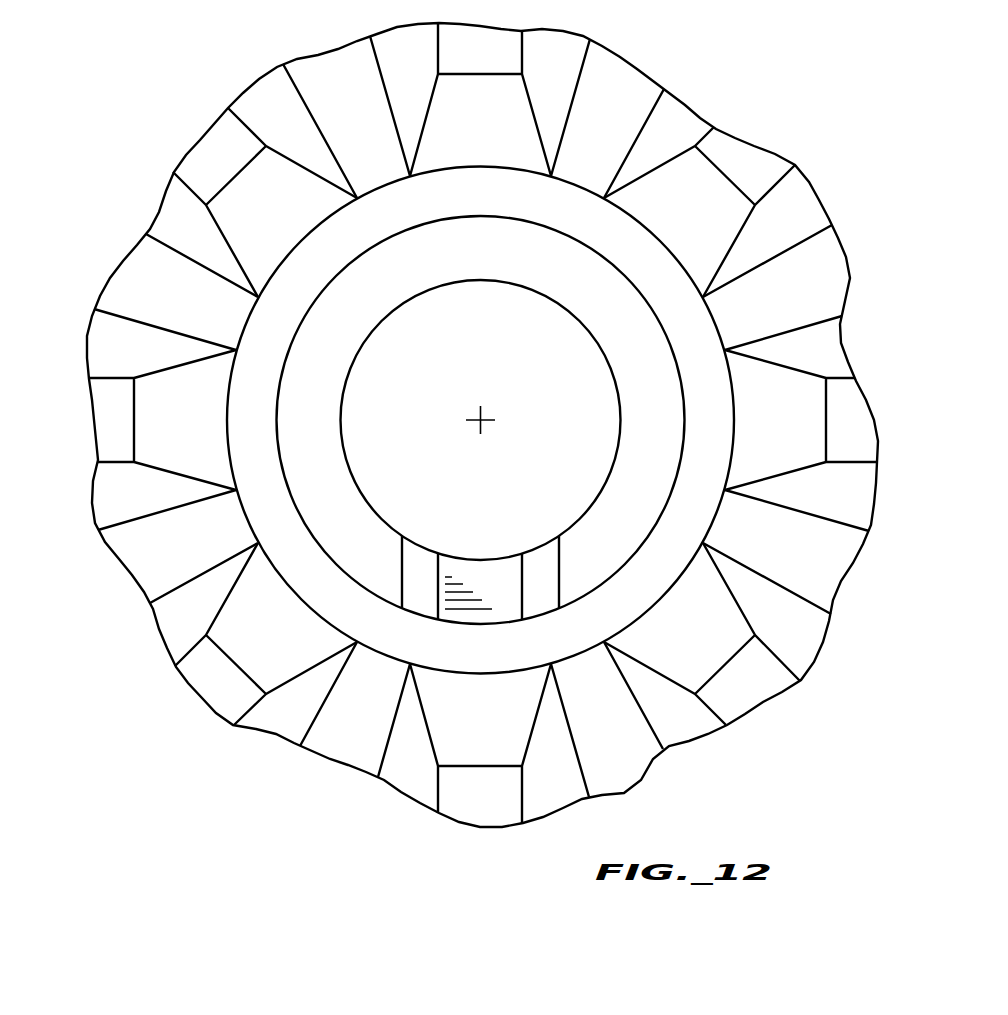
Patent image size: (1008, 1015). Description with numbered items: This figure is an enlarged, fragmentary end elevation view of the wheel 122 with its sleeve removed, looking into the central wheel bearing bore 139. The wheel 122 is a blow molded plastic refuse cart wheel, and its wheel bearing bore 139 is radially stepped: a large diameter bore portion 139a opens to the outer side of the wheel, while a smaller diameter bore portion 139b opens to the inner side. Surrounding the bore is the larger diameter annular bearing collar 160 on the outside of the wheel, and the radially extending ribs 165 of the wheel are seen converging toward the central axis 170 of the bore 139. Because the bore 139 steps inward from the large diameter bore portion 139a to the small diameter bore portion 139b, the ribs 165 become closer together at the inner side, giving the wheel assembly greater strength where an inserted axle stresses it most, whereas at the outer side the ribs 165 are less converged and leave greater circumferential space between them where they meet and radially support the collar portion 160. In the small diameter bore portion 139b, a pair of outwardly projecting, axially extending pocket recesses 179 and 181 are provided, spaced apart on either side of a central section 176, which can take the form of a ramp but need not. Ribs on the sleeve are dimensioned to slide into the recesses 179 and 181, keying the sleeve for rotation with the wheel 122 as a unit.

The wheel 122 is at (748, 163).
The annular bearing collar 160 is at (636, 241).
The radially extending ribs 165 is at (308, 88).
The wheel bearing bore 139 is at (481, 471).
The large diameter bore portion 139a is at (481, 581).
The small diameter bore portion 139b is at (355, 477).
The central axis 170 is at (493, 418).
The central section 176 is at (510, 603).
The pocket recess 179 is at (412, 602).
The pocket recess 181 is at (540, 603).